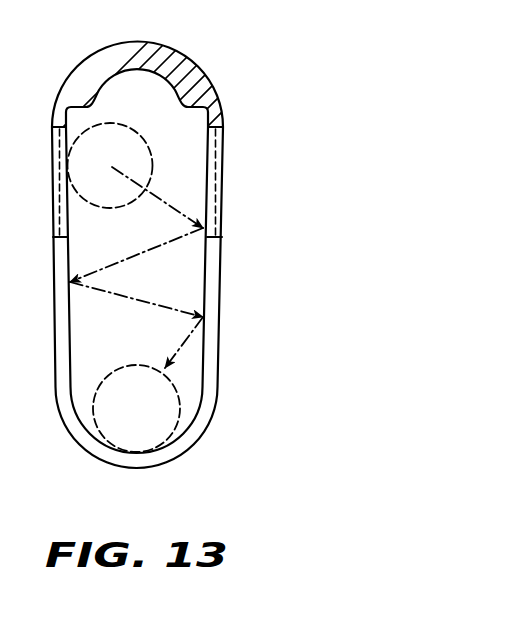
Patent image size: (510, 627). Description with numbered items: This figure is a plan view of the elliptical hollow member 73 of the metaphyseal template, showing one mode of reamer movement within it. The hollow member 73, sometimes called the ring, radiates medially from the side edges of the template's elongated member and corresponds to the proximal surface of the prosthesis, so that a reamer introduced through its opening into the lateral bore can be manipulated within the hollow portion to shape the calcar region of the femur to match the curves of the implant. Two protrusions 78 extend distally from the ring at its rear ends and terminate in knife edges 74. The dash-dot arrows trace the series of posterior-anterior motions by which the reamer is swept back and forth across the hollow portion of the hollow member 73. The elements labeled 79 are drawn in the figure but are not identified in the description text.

The end cap 79 is at (214, 98).
The knife edges 74 is at (217, 162).
The protrusions 78 is at (218, 216).
The hollow member 73 is at (212, 358).